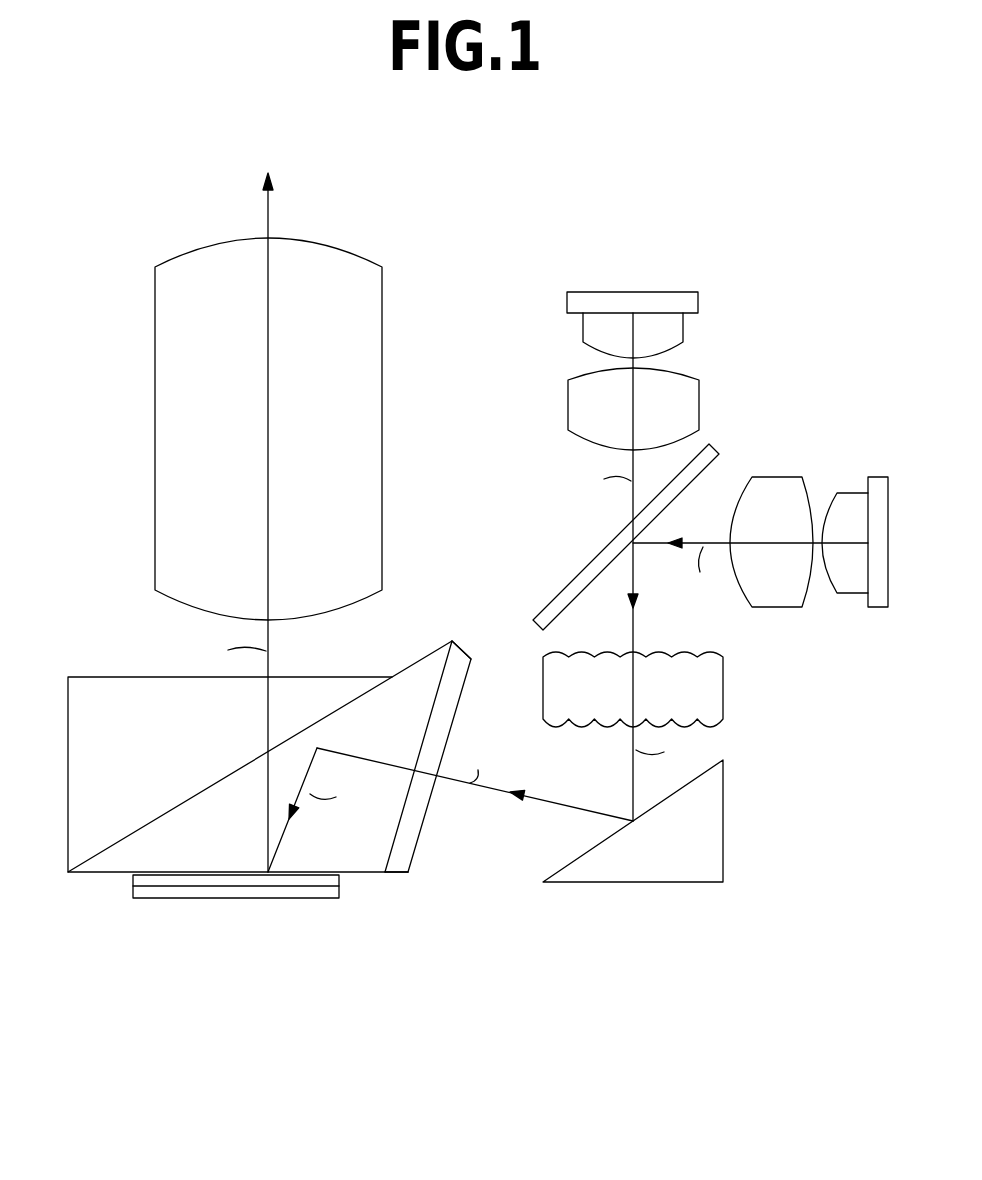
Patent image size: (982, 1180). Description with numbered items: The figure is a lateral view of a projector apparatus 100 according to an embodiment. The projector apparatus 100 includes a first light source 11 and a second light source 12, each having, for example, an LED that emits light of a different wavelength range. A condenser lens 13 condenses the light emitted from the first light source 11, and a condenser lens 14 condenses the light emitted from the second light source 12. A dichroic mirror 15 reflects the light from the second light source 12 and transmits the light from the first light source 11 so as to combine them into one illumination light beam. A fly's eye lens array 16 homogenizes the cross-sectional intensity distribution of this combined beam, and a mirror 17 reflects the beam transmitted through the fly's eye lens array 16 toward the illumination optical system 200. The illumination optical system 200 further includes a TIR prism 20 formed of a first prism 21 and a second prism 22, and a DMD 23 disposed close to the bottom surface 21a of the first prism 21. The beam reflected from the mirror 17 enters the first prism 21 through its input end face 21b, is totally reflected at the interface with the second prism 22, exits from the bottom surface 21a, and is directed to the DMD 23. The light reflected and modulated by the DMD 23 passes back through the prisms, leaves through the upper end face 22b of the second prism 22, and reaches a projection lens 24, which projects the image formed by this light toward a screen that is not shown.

The projector apparatus 100 is at (487, 193).
The first light source 11 is at (658, 300).
The second light source 12 is at (878, 477).
The condenser lens 13 is at (699, 392).
The condenser lens 14 is at (773, 479).
The dichroic mirror 15 is at (567, 586).
The fly's eye lens array 16 is at (723, 686).
The mirror 17 is at (723, 841).
The TIR prism 20 is at (118, 598).
The first prism 21 is at (433, 645).
The bottom surface 21a is at (362, 873).
The input end face 21b is at (452, 688).
The second prism 22 is at (95, 675).
The upper end face 22b is at (310, 677).
The DMD 23 is at (236, 900).
The projection lens 24 is at (163, 374).
The illumination optical system 200 is at (399, 940).